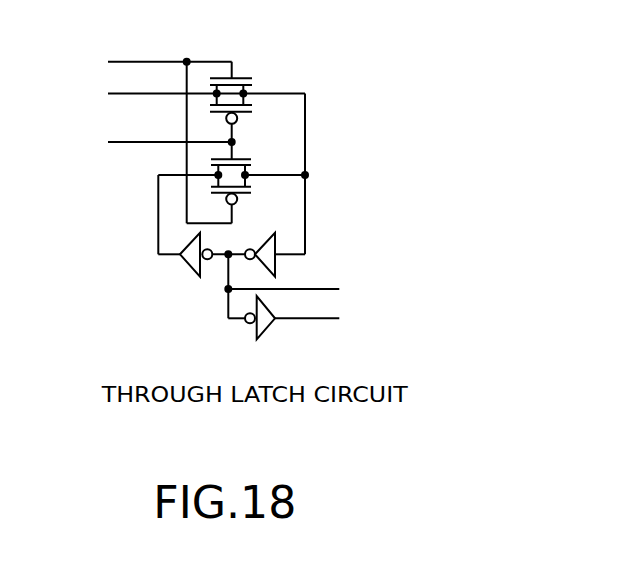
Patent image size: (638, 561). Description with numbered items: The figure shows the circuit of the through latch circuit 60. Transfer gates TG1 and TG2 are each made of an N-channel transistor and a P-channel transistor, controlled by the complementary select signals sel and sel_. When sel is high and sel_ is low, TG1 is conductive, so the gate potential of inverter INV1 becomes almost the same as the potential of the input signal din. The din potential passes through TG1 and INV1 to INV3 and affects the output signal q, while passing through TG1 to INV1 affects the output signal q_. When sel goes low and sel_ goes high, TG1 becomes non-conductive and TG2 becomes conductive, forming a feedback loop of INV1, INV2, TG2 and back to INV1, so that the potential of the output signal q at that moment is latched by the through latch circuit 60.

The through latch circuit 60 is at (218, 188).
The transfer gate TG1 is at (254, 104).
The transfer gate TG2 is at (255, 185).
The inverter INV1 is at (290, 259).
The inverter INV2 is at (170, 259).
The inverter INV3 is at (290, 320).